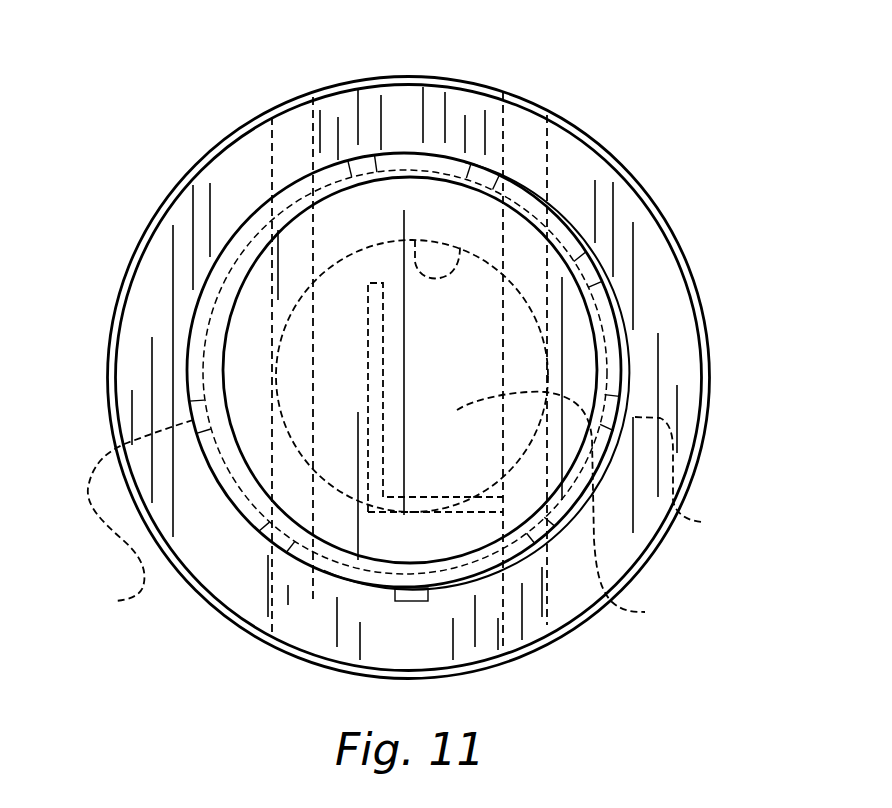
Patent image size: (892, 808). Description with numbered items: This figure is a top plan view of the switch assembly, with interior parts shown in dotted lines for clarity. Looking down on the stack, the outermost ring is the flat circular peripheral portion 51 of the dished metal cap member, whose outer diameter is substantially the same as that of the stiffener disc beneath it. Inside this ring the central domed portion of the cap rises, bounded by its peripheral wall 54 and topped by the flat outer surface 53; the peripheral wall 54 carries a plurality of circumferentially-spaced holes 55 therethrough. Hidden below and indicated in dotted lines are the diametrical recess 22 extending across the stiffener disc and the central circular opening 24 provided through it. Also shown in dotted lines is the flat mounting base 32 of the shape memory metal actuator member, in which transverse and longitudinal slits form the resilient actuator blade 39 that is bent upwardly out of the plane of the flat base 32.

The diametrical recess 22 is at (280, 163).
The central circular opening 24 is at (460, 247).
The flat mounting base 32 is at (458, 113).
The resilient actuator blade 39 is at (567, 508).
The flat circular peripheral portion 51 is at (668, 392).
The flat outer surface 53 is at (553, 263).
The peripheral wall 54 is at (620, 300).
The circumferentially-spaced holes 55 is at (417, 516).